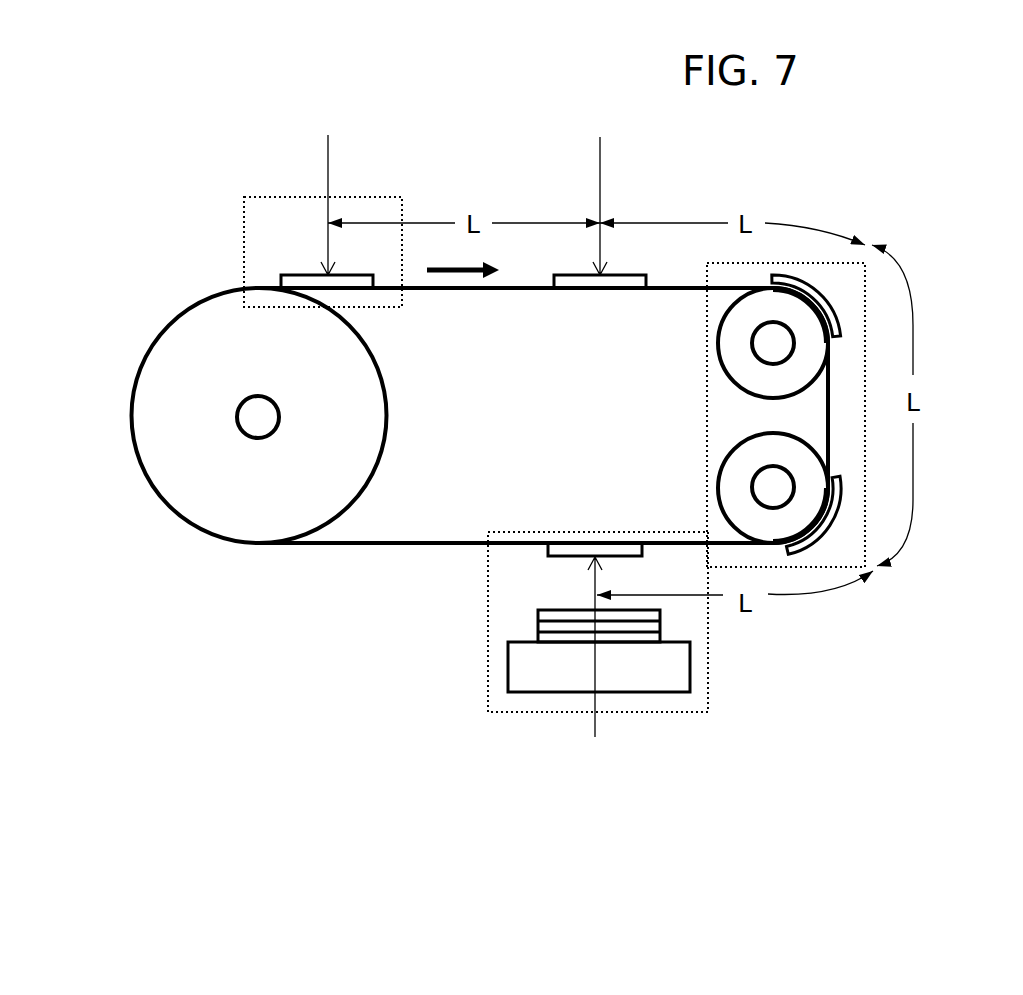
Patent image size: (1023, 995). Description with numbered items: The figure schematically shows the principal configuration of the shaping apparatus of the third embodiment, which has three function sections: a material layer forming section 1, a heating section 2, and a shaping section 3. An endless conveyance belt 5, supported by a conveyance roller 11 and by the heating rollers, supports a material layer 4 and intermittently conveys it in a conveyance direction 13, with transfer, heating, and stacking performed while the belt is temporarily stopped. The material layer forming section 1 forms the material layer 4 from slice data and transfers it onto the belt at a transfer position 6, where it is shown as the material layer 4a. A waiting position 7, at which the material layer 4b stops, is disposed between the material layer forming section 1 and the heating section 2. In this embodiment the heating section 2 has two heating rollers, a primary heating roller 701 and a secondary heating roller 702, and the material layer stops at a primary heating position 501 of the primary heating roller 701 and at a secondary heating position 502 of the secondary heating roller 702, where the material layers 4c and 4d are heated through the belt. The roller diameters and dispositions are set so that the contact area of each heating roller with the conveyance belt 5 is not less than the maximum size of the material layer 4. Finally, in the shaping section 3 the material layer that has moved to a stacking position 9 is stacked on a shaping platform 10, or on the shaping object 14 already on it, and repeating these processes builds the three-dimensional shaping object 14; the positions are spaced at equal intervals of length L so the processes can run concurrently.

The material layer forming section 1 is at (243, 252).
The heating section 2 is at (865, 503).
The shaping section 3 is at (488, 618).
The material layer 4 is at (528, 373).
The material layer transferred to the transfer position 4a is at (305, 283).
The material layer stopped at the waiting position 4b is at (582, 277).
The material layer stopped at the heating position 4c is at (790, 280).
The material layer stopped at the stacking position 4d is at (806, 557).
The conveyance belt 5 is at (432, 545).
The transfer position 6 is at (327, 186).
The waiting position 7 is at (600, 187).
The stacking position 9 is at (596, 668).
The shaping platform 10 is at (657, 665).
The conveyance roller 11 is at (198, 385).
The conveyance direction 13 is at (444, 268).
The shaping object 14 is at (660, 625).
The primary heating position 501 is at (822, 291).
The secondary heating position 502 is at (830, 532).
The primary heating roller 701 is at (733, 355).
The secondary heating roller 702 is at (733, 473).